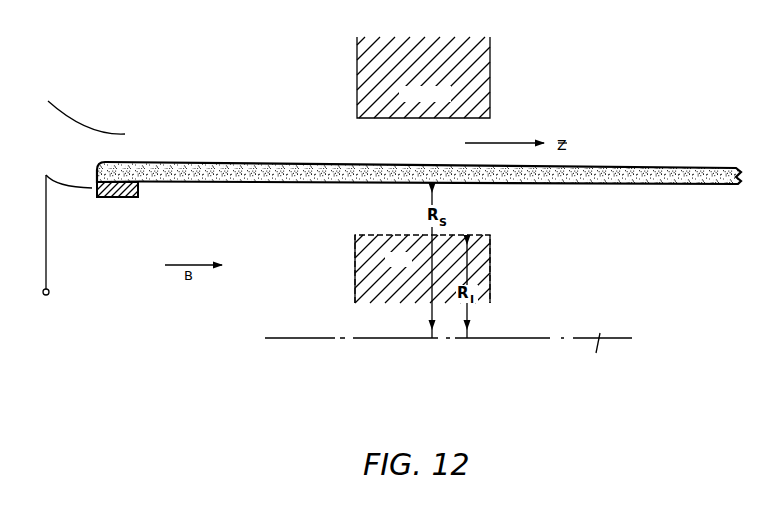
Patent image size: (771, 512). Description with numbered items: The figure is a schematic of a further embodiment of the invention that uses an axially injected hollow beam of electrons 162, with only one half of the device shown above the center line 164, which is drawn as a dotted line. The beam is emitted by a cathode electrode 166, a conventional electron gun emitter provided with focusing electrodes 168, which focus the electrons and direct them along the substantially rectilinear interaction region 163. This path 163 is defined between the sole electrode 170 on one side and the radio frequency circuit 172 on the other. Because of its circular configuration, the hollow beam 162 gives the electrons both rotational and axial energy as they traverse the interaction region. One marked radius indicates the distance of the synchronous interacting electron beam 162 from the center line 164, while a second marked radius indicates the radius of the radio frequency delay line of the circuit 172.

The axially injected hollow beam of electrons 162 is at (690, 177).
The interaction region 163 is at (343, 141).
The center line 164 is at (527, 338).
The cathode electrode 166 is at (117, 197).
The focusing electrodes 168 is at (87, 127).
The sole electrode 170 is at (490, 82).
The radio frequency circuit 172 is at (490, 253).